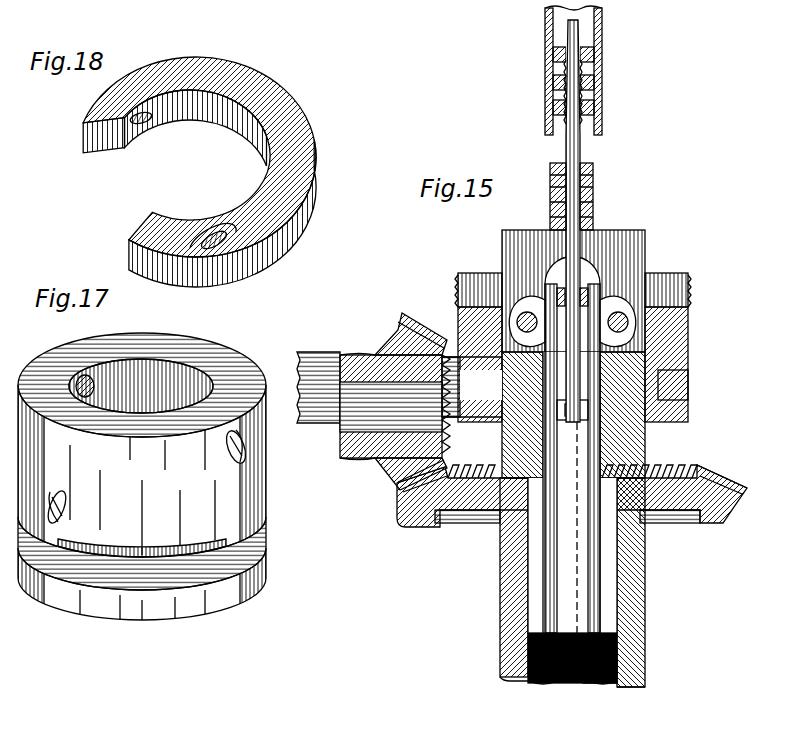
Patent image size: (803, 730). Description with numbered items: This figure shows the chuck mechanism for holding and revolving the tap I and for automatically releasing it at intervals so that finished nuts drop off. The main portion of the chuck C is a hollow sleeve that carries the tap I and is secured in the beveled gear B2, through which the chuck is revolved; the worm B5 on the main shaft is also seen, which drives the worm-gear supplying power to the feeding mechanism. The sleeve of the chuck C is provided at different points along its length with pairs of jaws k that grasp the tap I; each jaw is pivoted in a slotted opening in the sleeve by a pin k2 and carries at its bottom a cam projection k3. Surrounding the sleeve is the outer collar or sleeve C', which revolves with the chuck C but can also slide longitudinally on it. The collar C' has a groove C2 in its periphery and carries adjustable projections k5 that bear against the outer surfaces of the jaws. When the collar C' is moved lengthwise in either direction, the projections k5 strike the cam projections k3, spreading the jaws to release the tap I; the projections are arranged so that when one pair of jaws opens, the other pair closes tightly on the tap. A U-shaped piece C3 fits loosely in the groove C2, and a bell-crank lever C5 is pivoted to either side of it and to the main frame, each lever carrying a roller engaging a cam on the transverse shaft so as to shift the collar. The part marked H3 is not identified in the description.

In FIG. 18, the U-shaped piece C3 is at (199, 172).
In FIG. 17, the outer collar or sleeve C' is at (142, 449).
In FIG. 15, the outer collar or sleeve C' is at (593, 364).
In FIG. 17, the groove C2 is at (243, 541).
In FIG. 15, the groove C2 is at (472, 387).
In FIG. 17, the adjustable projections k5 is at (95, 387).
In FIG. 15, the adjustable projections k5 is at (458, 291).
In FIG. 15, the housing H3 is at (585, 36).
In FIG. 15, the tap I is at (582, 153).
In FIG. 15, the jaws k is at (524, 242).
In FIG. 15, the pins k2 is at (520, 313).
In FIG. 15, the cam projection k3 is at (500, 330).
In FIG. 15, the worm B5 is at (572, 477).
In FIG. 15, the beveled gear B2 is at (400, 348).
In FIG. 15, the chuck C is at (572, 485).
In FIG. 15, the bell-crank lever C5 is at (327, 370).